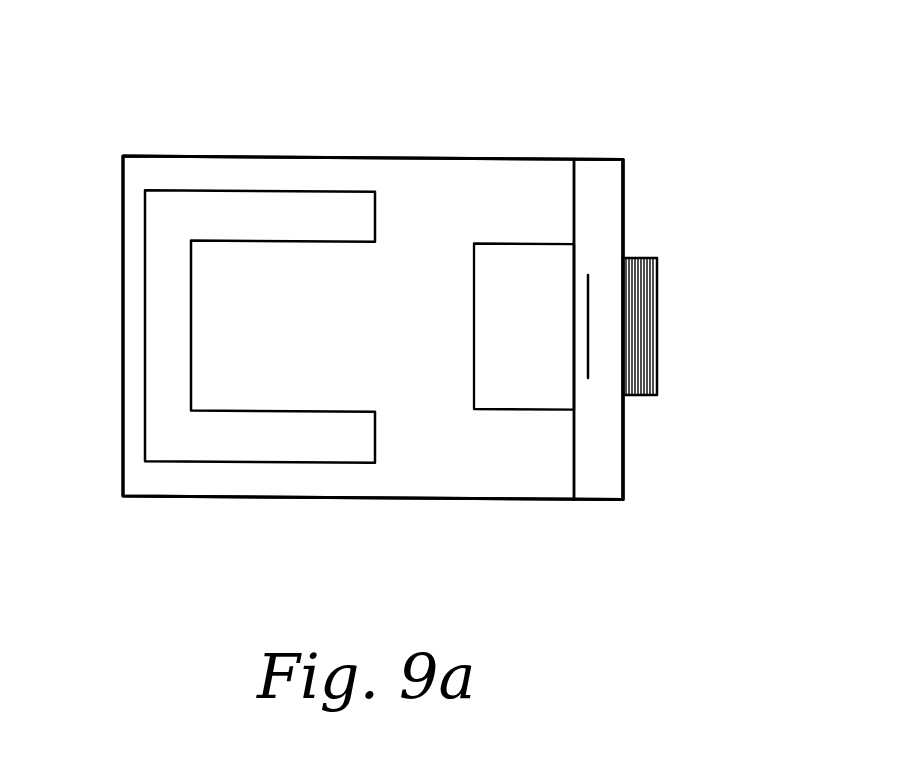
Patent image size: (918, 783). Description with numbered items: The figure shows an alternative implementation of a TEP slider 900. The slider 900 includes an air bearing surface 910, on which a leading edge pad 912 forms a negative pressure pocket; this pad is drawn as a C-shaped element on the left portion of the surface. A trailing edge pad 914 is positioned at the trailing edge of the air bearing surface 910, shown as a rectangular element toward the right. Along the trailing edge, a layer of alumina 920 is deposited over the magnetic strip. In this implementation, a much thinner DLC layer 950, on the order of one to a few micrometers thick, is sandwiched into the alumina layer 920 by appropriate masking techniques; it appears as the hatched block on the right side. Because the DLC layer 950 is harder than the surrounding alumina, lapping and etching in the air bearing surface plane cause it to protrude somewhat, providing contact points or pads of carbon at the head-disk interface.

The TEP slider 900 is at (585, 75).
The air bearing surface 910 is at (418, 235).
The leading edge pad 912 is at (143, 220).
The trailing edge pad 914 is at (543, 409).
The alumina layer 920 is at (623, 202).
The DLC layer 950 is at (657, 385).